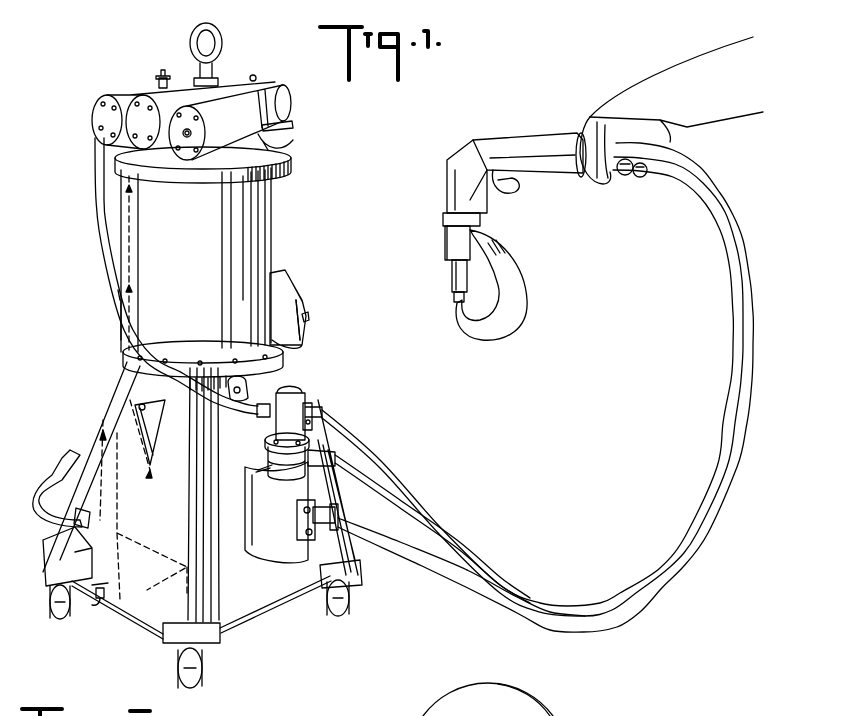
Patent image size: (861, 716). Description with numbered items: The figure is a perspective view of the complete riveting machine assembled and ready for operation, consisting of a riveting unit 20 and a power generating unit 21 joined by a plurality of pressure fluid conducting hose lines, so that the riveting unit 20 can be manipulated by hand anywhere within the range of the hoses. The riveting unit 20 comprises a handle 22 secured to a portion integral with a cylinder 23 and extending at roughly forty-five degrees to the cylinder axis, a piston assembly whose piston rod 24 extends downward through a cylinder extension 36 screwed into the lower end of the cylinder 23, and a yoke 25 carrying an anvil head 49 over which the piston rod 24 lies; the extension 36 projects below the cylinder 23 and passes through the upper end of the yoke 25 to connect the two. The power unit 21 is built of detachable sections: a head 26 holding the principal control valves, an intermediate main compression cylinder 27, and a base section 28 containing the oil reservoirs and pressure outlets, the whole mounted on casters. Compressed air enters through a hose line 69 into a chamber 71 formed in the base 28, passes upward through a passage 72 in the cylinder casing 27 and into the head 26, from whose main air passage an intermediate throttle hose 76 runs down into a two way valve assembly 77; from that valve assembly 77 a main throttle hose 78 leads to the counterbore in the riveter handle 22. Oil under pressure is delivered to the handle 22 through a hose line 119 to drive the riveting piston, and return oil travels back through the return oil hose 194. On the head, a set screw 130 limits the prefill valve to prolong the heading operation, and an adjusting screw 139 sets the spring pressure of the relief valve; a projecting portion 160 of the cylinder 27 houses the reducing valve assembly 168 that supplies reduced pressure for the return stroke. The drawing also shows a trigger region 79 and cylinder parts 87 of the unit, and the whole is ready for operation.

The riveting unit 20 is at (428, 233).
The power generating unit 21 is at (113, 307).
The handle 22 is at (528, 140).
The cylinder 23 is at (452, 168).
The piston rod 24 is at (452, 283).
The yoke 25 is at (507, 317).
The head 26 is at (280, 150).
The main compression cylinder 27 is at (250, 233).
The base section 28 is at (254, 603).
The cylinder extension 36 is at (480, 222).
The anvil head 49 is at (453, 300).
The hose line 69 is at (70, 456).
The chamber 71 is at (160, 581).
The passage 72 is at (122, 327).
The intermediate throttle hose 76 is at (94, 177).
The two way valve assembly 77 is at (312, 393).
The main throttle hose 78 is at (383, 461).
The trigger 79 is at (583, 173).
The cylinders 87 is at (128, 121).
The hose line 119 is at (422, 562).
The set screw 130 is at (183, 140).
The adjusting screw 139 is at (167, 67).
The projecting portion 160 is at (287, 280).
The reducing valve assembly 168 is at (307, 295).
The return oil hose 194 is at (403, 513).